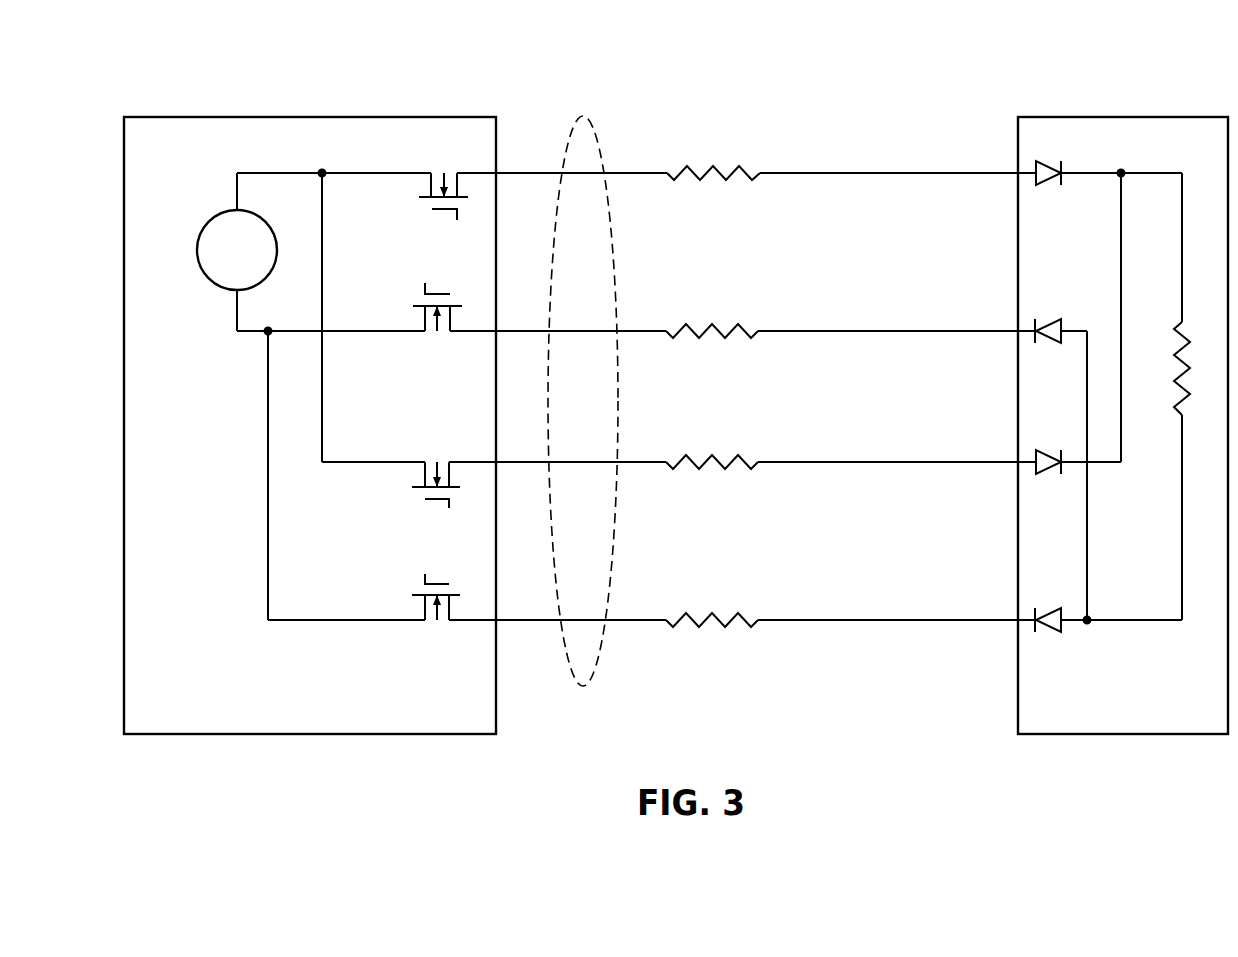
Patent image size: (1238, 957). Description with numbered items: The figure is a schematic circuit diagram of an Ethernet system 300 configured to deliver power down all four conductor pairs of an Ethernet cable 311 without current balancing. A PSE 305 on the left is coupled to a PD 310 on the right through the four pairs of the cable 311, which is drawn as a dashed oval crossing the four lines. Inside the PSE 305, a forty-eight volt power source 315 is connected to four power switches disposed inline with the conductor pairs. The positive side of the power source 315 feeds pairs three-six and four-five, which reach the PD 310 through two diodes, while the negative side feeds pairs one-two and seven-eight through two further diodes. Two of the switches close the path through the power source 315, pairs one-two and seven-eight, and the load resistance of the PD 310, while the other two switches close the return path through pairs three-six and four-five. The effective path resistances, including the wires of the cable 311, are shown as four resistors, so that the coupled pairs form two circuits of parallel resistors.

The Ethernet system 300 is at (143, 83).
The PSE 305 is at (383, 115).
The PD 310 is at (1078, 116).
The Ethernet cable 311 is at (578, 127).
The 48V power source 315 is at (212, 217).